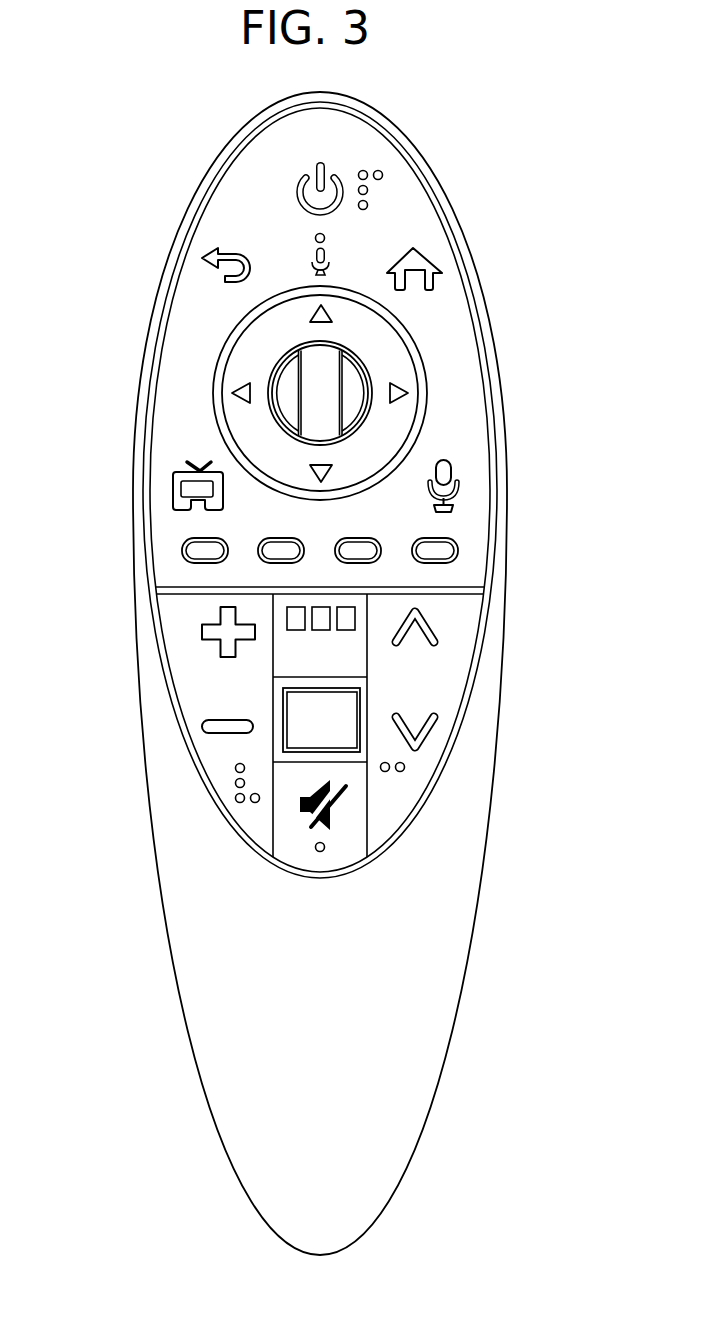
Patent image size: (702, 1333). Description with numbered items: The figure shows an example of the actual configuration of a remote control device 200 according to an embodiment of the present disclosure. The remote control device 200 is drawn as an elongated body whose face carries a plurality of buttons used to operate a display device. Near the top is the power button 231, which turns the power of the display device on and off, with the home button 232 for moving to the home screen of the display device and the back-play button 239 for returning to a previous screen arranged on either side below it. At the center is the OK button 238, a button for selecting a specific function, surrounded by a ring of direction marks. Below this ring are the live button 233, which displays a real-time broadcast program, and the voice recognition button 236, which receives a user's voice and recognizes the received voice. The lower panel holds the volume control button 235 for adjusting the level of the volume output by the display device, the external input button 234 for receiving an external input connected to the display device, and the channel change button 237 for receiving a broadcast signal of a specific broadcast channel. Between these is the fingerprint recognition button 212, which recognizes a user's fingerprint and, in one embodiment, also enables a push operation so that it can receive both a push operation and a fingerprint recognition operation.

The remote control device 200 is at (73, 138).
The fingerprint recognition button 212 is at (337, 752).
The power button 231 is at (338, 175).
The home button 232 is at (428, 253).
The live button 233 is at (173, 495).
The external input button 234 is at (325, 608).
The volume control button 235 is at (173, 698).
The voice recognition button 236 is at (458, 480).
The channel change button 237 is at (457, 668).
The OK button 238 is at (282, 375).
The back-play button 239 is at (213, 267).